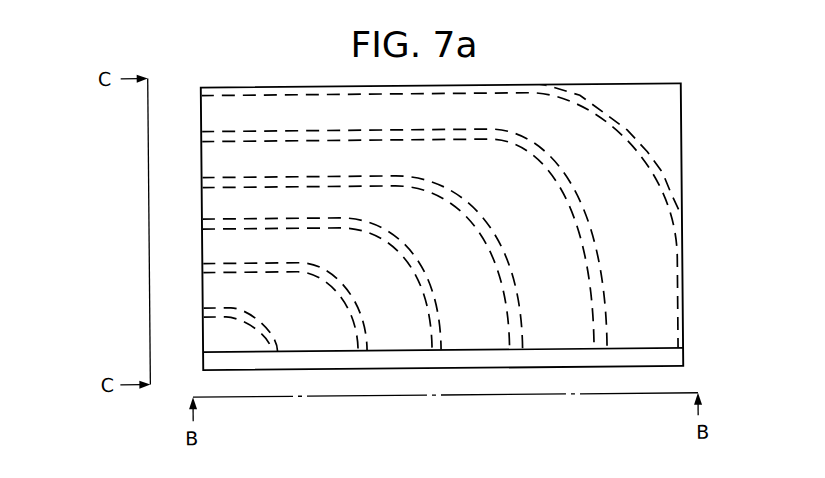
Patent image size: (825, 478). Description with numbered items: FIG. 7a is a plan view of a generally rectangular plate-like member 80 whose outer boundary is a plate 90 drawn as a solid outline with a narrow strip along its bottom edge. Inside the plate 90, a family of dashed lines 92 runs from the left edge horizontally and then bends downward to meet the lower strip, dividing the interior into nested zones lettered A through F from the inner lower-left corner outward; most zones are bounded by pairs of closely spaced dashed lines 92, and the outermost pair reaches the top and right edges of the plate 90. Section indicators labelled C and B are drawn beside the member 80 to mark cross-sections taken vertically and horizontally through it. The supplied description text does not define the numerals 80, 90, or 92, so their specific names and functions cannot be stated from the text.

The heating plate assembly 80 is at (738, 199).
The plate 90 is at (682, 121).
The dashed heating zone boundary lines 92 is at (416, 130).